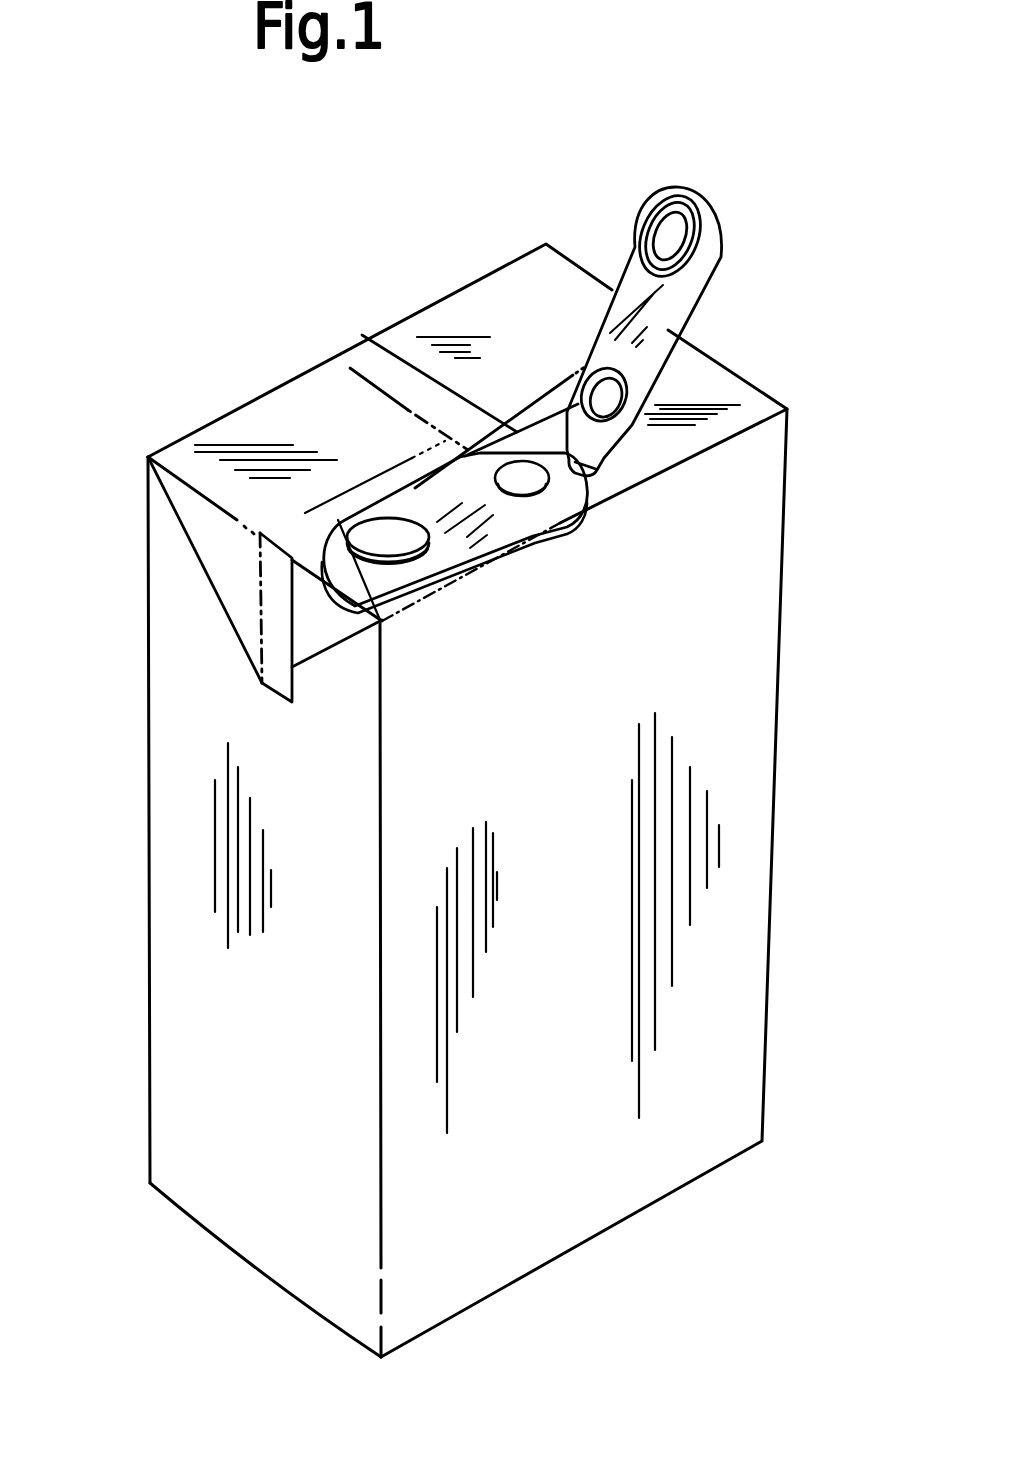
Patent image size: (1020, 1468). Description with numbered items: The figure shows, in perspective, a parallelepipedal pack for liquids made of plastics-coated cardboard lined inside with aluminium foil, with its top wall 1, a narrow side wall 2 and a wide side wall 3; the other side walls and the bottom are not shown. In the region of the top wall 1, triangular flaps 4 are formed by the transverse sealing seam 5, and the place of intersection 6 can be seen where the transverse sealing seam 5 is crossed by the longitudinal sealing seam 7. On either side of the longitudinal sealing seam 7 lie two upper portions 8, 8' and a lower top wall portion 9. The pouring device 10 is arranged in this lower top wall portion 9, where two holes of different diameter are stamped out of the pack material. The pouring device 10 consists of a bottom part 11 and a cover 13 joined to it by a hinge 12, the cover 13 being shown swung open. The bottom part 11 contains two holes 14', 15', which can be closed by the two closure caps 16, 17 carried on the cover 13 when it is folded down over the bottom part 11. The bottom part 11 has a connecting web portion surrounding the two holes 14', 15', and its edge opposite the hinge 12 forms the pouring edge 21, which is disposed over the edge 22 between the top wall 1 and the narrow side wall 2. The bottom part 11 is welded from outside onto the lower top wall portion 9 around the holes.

The top wall 1 is at (455, 258).
The narrow side wall 2 is at (272, 1063).
The wide side wall 3 is at (586, 1088).
The triangular flaps 4 is at (198, 517).
The transverse sealing seam 5 is at (290, 543).
The place of intersection 6 is at (491, 440).
The longitudinal sealing seam 7 is at (370, 370).
The upper portion 8 is at (320, 459).
The upper portion 8' is at (485, 324).
The lower top wall portion 9 is at (703, 387).
The pouring device 10 is at (688, 318).
The bottom part 11 is at (455, 582).
The hinge 12 is at (597, 473).
The cover 13 is at (637, 280).
The hole 14' is at (371, 671).
The hole 15' is at (537, 577).
The closure cap 16 is at (670, 230).
The closure cap 17 is at (608, 400).
The pouring edge 21 is at (327, 587).
The edge 22 is at (233, 517).